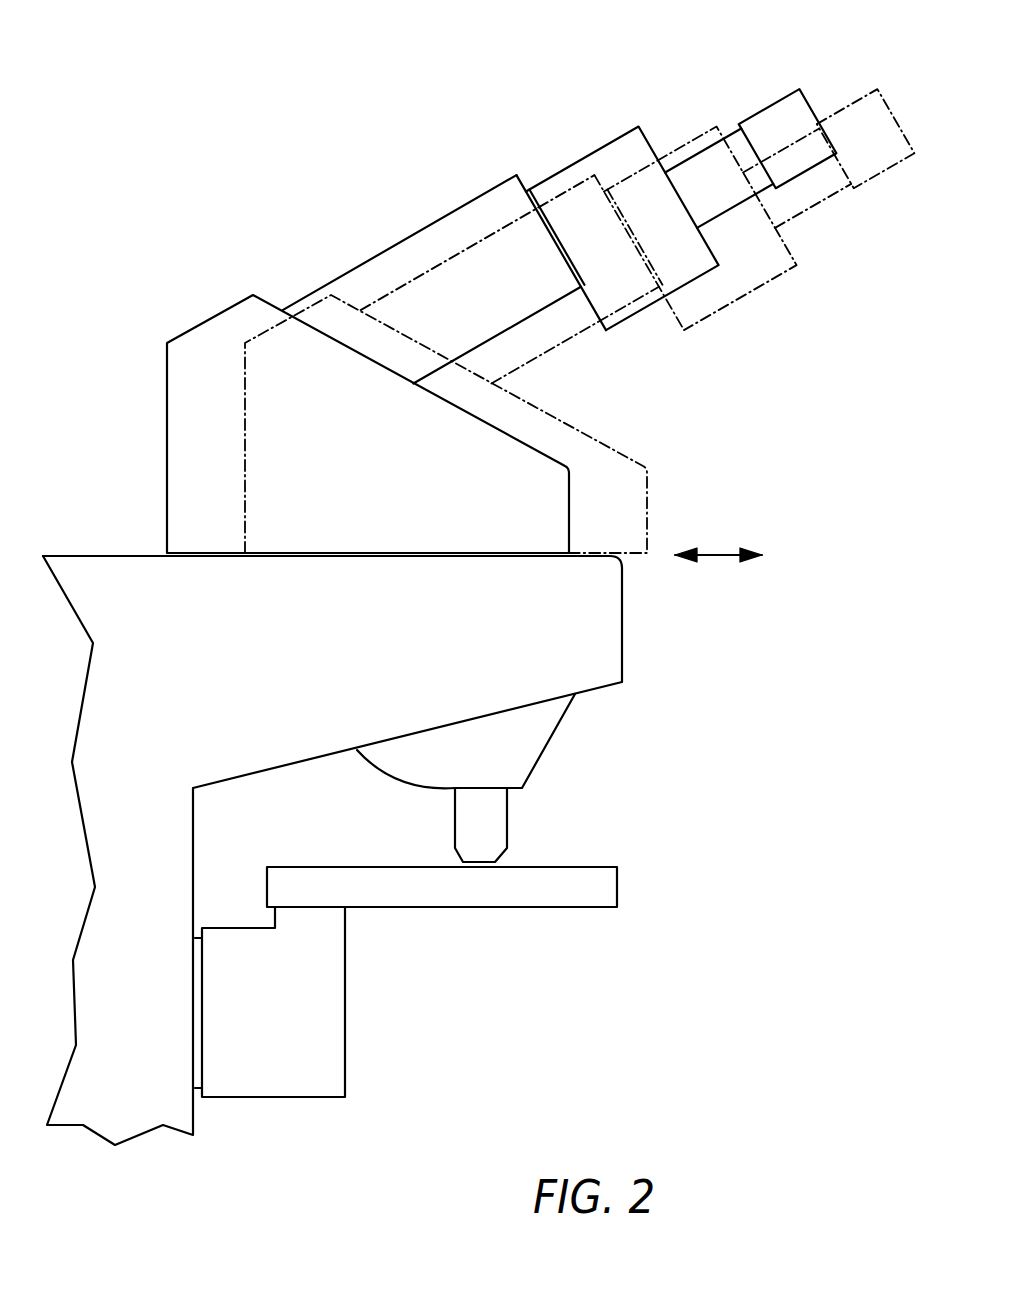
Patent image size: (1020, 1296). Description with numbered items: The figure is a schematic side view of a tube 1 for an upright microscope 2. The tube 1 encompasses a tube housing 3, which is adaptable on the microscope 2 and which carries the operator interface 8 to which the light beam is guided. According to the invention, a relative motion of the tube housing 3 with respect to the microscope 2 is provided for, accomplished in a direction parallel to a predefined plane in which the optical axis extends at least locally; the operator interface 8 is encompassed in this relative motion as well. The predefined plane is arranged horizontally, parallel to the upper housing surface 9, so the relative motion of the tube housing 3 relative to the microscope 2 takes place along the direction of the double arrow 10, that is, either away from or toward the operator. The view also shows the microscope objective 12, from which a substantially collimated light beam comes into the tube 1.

The tube 1 is at (202, 324).
The upright microscope 2 is at (590, 648).
The tube housing 3 is at (384, 251).
The operator interface 8 is at (766, 82).
The upper housing surface 9 is at (128, 555).
The double arrow 10 is at (723, 554).
The microscope objective 12 is at (493, 823).